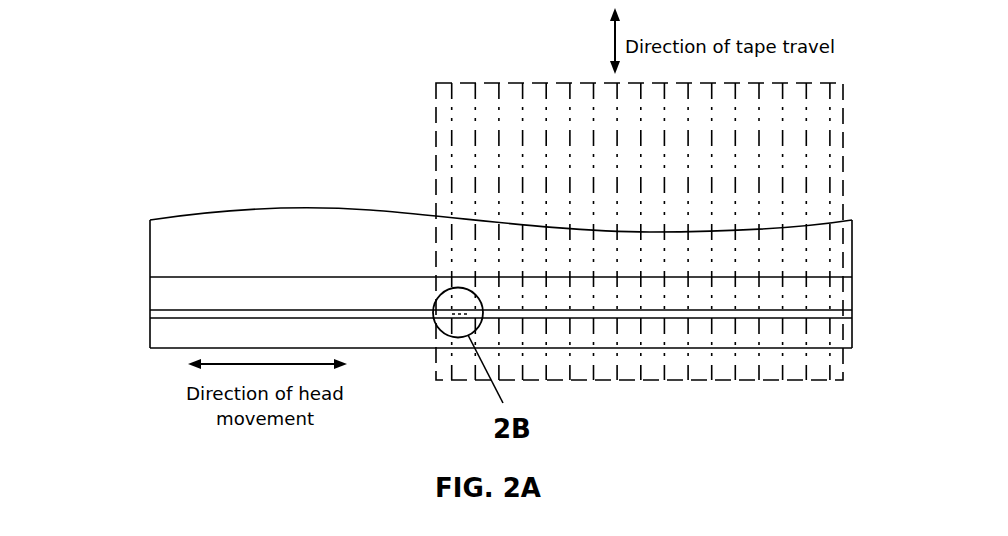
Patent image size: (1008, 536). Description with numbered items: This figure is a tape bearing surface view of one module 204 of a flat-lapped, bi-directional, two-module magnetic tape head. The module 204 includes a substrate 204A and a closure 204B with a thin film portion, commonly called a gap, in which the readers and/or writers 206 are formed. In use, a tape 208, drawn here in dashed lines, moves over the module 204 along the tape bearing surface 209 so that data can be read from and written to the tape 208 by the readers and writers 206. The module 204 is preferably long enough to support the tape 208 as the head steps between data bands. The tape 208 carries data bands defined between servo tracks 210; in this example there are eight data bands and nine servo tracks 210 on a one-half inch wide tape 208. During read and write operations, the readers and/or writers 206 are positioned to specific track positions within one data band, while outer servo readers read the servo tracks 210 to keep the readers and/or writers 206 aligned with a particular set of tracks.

The module 204 is at (454, 278).
The substrate 204A is at (286, 208).
The closure 204B is at (147, 333).
The readers and/or writers 206 is at (433, 313).
The tape 208 is at (437, 87).
The tape bearing surface 209 is at (340, 297).
The servo tracks 210 is at (545, 166).